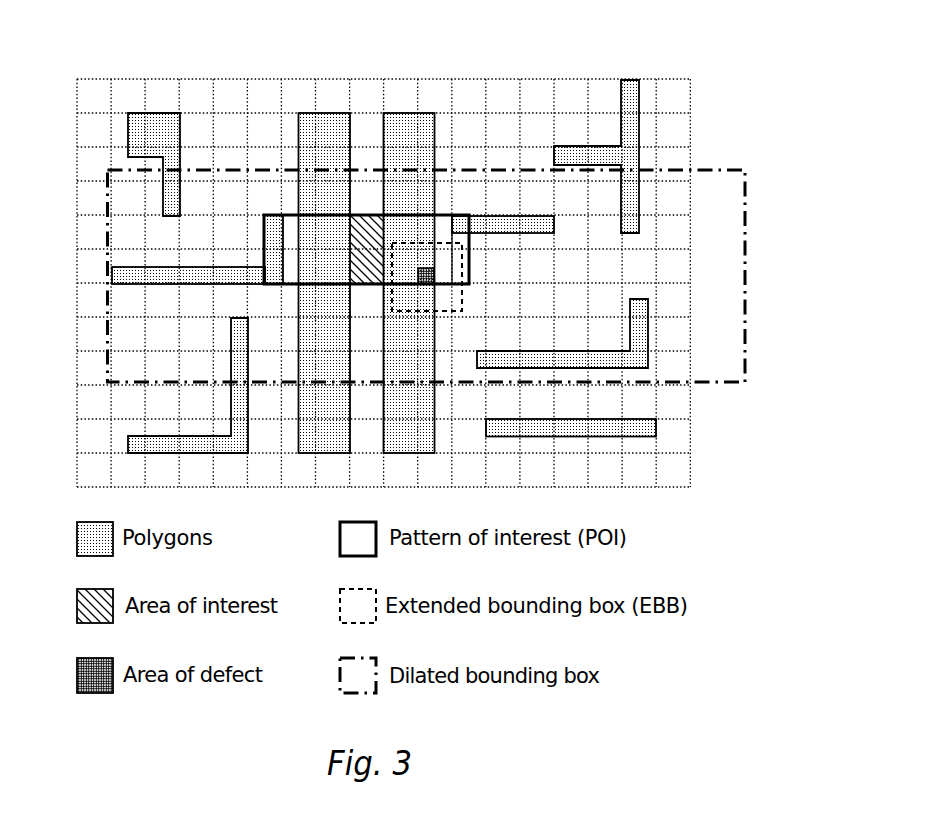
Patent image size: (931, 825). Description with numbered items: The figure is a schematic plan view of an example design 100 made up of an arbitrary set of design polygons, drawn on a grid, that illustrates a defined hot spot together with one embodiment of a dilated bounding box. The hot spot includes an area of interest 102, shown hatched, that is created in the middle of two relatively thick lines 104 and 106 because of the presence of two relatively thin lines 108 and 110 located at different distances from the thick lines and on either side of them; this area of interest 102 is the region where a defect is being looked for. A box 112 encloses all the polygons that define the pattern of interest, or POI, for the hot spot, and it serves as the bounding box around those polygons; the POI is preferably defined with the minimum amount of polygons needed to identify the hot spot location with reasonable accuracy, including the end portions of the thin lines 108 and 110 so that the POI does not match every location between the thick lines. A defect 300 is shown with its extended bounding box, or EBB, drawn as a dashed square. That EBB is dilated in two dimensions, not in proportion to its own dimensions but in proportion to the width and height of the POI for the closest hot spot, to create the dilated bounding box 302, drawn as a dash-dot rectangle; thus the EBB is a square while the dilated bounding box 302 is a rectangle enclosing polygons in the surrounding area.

The design 100 is at (696, 114).
The area of interest 102 is at (377, 228).
The relatively thick line 104 is at (323, 113).
The relatively thick line 106 is at (422, 113).
The relatively thin line 108 is at (112, 267).
The relatively thin line 110 is at (554, 228).
The box 112 is at (265, 214).
The defect 300 is at (434, 267).
The dilated bounding box 302 is at (745, 362).